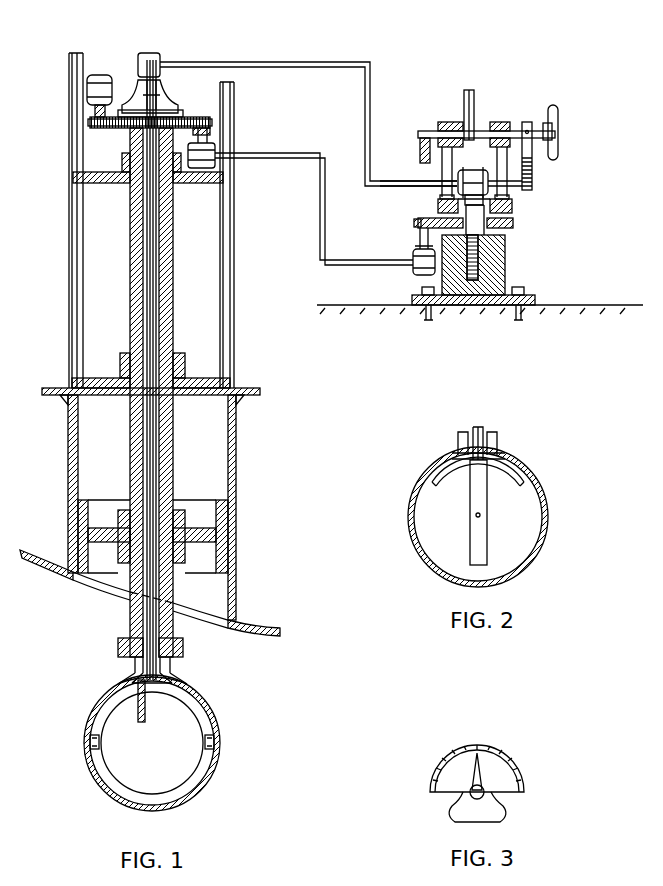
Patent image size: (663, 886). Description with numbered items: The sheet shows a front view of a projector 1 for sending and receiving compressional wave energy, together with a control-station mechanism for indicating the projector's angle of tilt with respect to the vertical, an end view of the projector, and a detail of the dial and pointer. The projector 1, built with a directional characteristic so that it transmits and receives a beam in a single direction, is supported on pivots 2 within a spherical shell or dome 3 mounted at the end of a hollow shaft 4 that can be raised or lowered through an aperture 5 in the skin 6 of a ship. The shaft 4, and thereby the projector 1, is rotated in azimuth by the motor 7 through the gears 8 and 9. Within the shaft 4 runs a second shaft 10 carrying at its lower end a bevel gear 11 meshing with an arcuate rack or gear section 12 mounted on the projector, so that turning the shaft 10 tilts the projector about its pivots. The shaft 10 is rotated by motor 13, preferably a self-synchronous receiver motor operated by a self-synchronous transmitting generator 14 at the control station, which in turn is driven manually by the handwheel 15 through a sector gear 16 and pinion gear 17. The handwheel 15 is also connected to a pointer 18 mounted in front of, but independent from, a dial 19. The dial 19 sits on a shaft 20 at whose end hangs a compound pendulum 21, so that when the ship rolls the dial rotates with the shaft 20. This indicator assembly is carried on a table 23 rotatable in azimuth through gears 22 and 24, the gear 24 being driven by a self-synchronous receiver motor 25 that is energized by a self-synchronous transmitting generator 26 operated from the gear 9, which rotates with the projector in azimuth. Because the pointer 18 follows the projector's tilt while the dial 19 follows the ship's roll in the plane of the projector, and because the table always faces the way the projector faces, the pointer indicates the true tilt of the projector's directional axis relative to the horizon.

In FIG. 1, the projector 1 is at (127, 758).
In FIG. 2, the projector 1 is at (483, 548).
In FIG. 1, the pivots 2 is at (222, 737).
In FIG. 1, the spherical shell or dome 3 is at (217, 712).
In FIG. 1, the hollow shaft 4 is at (178, 617).
In FIG. 1, the aperture 5 is at (110, 590).
In FIG. 1, the skin 6 is at (48, 572).
In FIG. 1, the motor 7 is at (100, 75).
In FIG. 1, the gear 8 is at (92, 124).
In FIG. 1, the gear 9 is at (120, 128).
In FIG. 1, the second shaft 10 is at (165, 660).
In FIG. 2, the second shaft 10 is at (481, 428).
In FIG. 1, the bevel gear 11 is at (157, 687).
In FIG. 2, the bevel gear 11 is at (497, 450).
In FIG. 1, the arcuate rack or gear section 12 is at (146, 708).
In FIG. 2, the arcuate rack or gear section 12 is at (520, 470).
In FIG. 1, the motor 13 is at (158, 60).
In FIG. 1, the self-synchronous transmitting generator 14 is at (475, 167).
In FIG. 1, the handwheel 15 is at (558, 118).
In FIG. 1, the sector gear 16 is at (533, 165).
In FIG. 1, the pinion gear 17 is at (533, 184).
In FIG. 1, the pointer 18 is at (475, 106).
In FIG. 1, the dial 19 is at (467, 90).
In FIG. 1, the shaft 20 is at (437, 128).
In FIG. 1, the compound pendulum 21 is at (420, 150).
In FIG. 1, the gear 22 is at (513, 223).
In FIG. 1, the table 23 is at (512, 207).
In FIG. 1, the gear 24 is at (417, 222).
In FIG. 1, the self-synchronous receiver motor 25 is at (413, 265).
In FIG. 1, the self-synchronous transmitting generator 26 is at (213, 150).